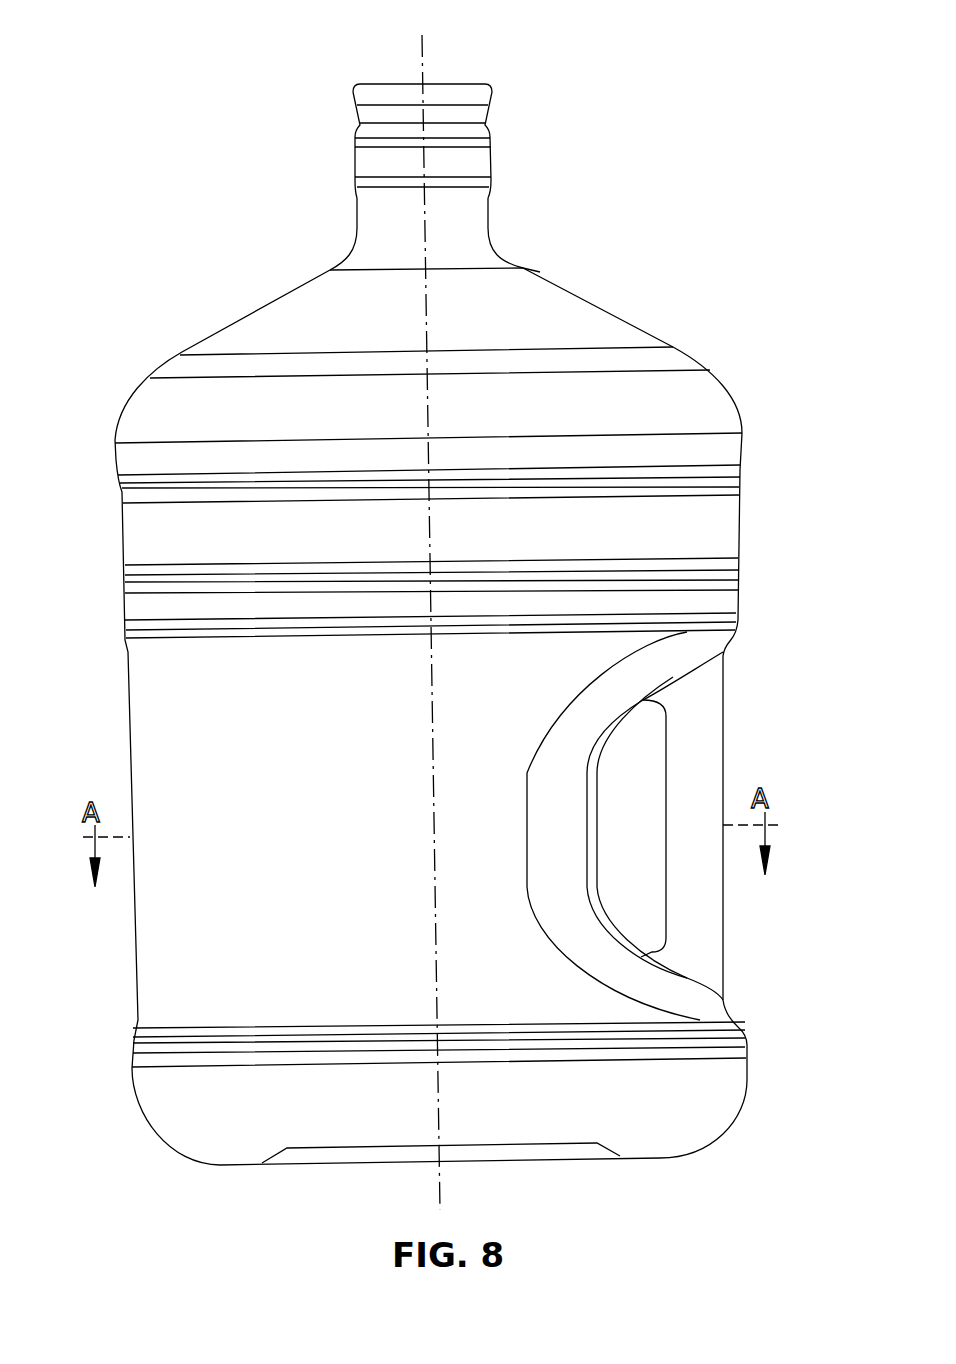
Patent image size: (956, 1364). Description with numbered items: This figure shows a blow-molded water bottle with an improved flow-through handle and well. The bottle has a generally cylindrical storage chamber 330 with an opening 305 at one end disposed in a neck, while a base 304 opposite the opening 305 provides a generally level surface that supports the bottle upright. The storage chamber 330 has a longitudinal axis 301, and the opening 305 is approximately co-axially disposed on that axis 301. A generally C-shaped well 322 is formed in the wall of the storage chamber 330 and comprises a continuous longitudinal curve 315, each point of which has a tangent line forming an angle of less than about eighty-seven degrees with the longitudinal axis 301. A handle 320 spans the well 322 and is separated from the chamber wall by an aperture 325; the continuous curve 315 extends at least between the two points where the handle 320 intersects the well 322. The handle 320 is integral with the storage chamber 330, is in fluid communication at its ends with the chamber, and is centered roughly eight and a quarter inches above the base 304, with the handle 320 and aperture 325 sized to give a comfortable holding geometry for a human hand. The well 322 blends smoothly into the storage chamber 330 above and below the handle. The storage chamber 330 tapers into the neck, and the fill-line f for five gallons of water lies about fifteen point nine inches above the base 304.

The longitudinal axis 301 is at (445, 1190).
The base 304 is at (382, 1163).
The opening 305 is at (452, 82).
The continuous longitudinal curve 315 is at (590, 858).
The handle 320 is at (723, 916).
The well 322 is at (743, 685).
The aperture 325 is at (657, 840).
The generally cylindrical storage chamber 330 is at (745, 385).
The fill-line f is at (542, 266).